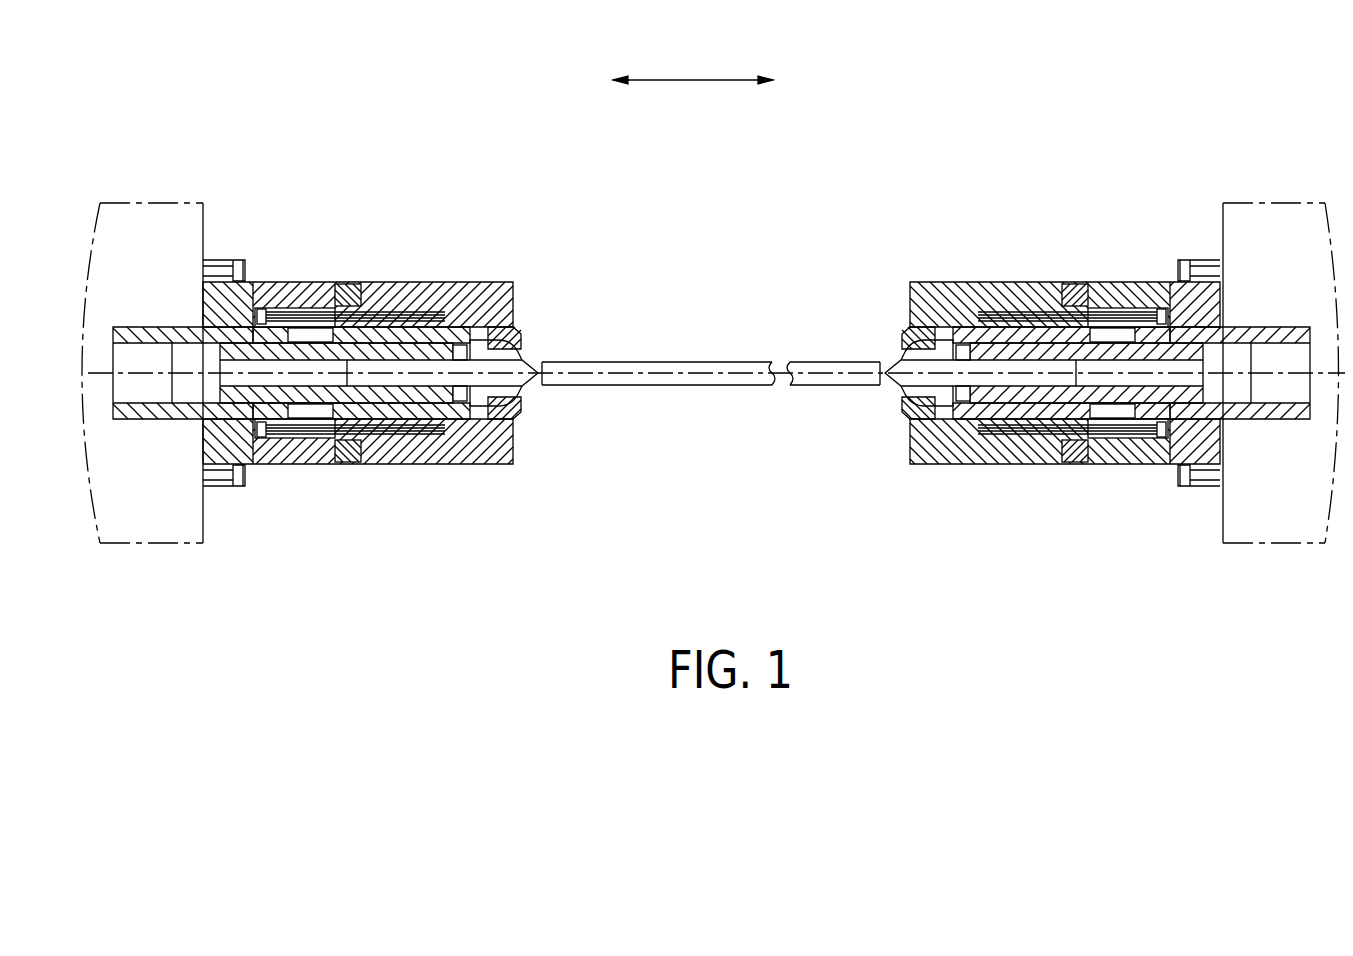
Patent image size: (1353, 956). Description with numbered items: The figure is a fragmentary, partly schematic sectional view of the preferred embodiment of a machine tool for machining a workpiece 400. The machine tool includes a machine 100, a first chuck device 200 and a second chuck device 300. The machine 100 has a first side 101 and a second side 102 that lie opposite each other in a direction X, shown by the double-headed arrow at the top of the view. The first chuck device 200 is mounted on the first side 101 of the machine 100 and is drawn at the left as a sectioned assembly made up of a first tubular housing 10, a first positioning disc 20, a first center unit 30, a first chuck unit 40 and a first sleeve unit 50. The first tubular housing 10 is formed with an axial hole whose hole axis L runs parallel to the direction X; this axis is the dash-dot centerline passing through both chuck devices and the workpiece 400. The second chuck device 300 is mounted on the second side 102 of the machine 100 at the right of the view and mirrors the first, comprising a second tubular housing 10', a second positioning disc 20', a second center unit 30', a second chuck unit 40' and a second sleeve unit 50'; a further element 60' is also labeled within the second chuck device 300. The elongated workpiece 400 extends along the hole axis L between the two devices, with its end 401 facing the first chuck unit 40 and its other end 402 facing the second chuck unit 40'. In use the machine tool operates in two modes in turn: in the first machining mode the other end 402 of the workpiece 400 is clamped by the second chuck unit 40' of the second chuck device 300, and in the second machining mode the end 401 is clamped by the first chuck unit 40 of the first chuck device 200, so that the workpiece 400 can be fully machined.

The machine 100 is at (150, 203).
The first side 101 is at (205, 226).
The second side 102 is at (1212, 222).
The first chuck device 200 is at (430, 283).
The second chuck device 300 is at (1112, 281).
The first tubular housing 10 is at (350, 309).
The first positioning disc 20 is at (334, 323).
The first center unit 30 is at (397, 363).
The first chuck unit 40 is at (540, 344).
The first sleeve unit 50 is at (398, 318).
The second tubular housing 10' is at (1073, 321).
The second positioning disc 20' is at (1068, 335).
The second center unit 30' is at (927, 310).
The second chuck unit 40' is at (879, 353).
The second sleeve unit 50' is at (1060, 318).
The positioning member 60' is at (1079, 440).
The workpiece 400 is at (718, 387).
The end of the workpiece 401 is at (552, 376).
The other end of the workpiece 402 is at (869, 383).
The hole axis L is at (674, 373).
The direction X is at (705, 77).